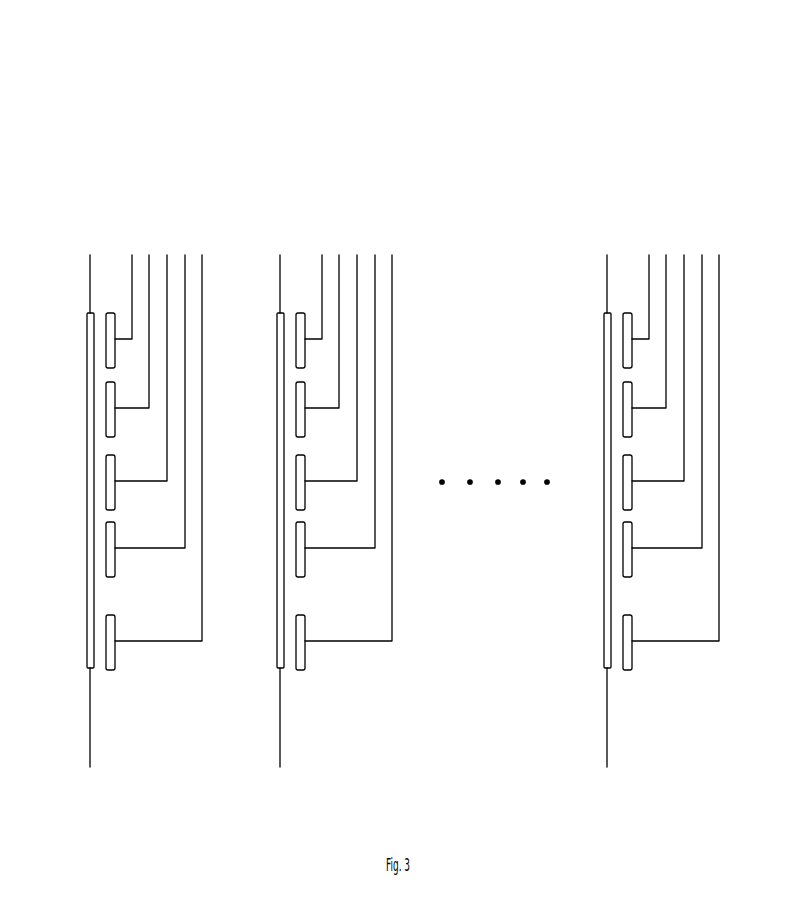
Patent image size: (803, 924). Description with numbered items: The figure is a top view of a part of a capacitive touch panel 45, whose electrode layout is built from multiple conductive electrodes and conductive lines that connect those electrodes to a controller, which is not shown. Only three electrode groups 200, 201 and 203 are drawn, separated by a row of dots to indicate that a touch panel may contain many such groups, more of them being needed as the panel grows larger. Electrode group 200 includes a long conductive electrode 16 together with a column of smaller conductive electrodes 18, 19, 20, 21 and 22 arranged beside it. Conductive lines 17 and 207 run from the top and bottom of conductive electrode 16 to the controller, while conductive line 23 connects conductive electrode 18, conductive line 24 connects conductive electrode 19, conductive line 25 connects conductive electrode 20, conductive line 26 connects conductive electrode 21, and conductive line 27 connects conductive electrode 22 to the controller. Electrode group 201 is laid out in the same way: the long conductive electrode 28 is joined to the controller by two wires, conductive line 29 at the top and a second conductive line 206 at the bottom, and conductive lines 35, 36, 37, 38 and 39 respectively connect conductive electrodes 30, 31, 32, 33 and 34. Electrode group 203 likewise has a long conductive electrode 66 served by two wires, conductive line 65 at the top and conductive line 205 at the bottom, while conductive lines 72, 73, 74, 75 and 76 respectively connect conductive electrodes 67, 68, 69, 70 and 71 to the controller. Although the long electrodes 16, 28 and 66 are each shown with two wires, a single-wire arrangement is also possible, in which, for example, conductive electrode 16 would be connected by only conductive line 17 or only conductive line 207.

The conductive electrode 16 is at (88, 572).
The conductive line 17 is at (90, 273).
The conductive electrode 18 is at (112, 313).
The conductive electrode 19 is at (117, 394).
The conductive electrode 20 is at (116, 469).
The conductive electrode 21 is at (116, 541).
The conductive electrode 22 is at (116, 629).
The conductive line 23 is at (126, 286).
The conductive line 24 is at (135, 320).
The conductive line 25 is at (144, 357).
The conductive line 26 is at (153, 390).
The conductive line 27 is at (161, 437).
The conductive electrode 28 is at (278, 572).
The conductive line 29 is at (280, 273).
The conductive electrode 30 is at (302, 313).
The conductive electrode 31 is at (307, 394).
The conductive electrode 32 is at (306, 469).
The conductive electrode 33 is at (306, 541).
The conductive electrode 34 is at (306, 629).
The conductive line 35 is at (316, 286).
The conductive line 36 is at (325, 320).
The conductive line 37 is at (334, 357).
The conductive line 38 is at (343, 390).
The conductive line 39 is at (351, 437).
The electrode array assembly 45 is at (517, 82).
The conductive line 65 is at (607, 273).
The conductive electrode 66 is at (605, 572).
The conductive electrode 67 is at (629, 313).
The conductive electrode 68 is at (634, 394).
The conductive electrode 69 is at (633, 469).
The conductive electrode 70 is at (633, 541).
The conductive electrode 71 is at (633, 629).
The conductive line 72 is at (643, 286).
The conductive line 73 is at (652, 320).
The conductive line 74 is at (661, 357).
The conductive line 75 is at (670, 390).
The conductive line 76 is at (678, 437).
The electrode group 200 is at (135, 183).
The electrode group 201 is at (338, 182).
The electrode group 203 is at (653, 176).
The common lead terminal of last array 205 is at (609, 731).
The common lead terminal of second array 206 is at (283, 731).
The conductive line 207 is at (93, 731).